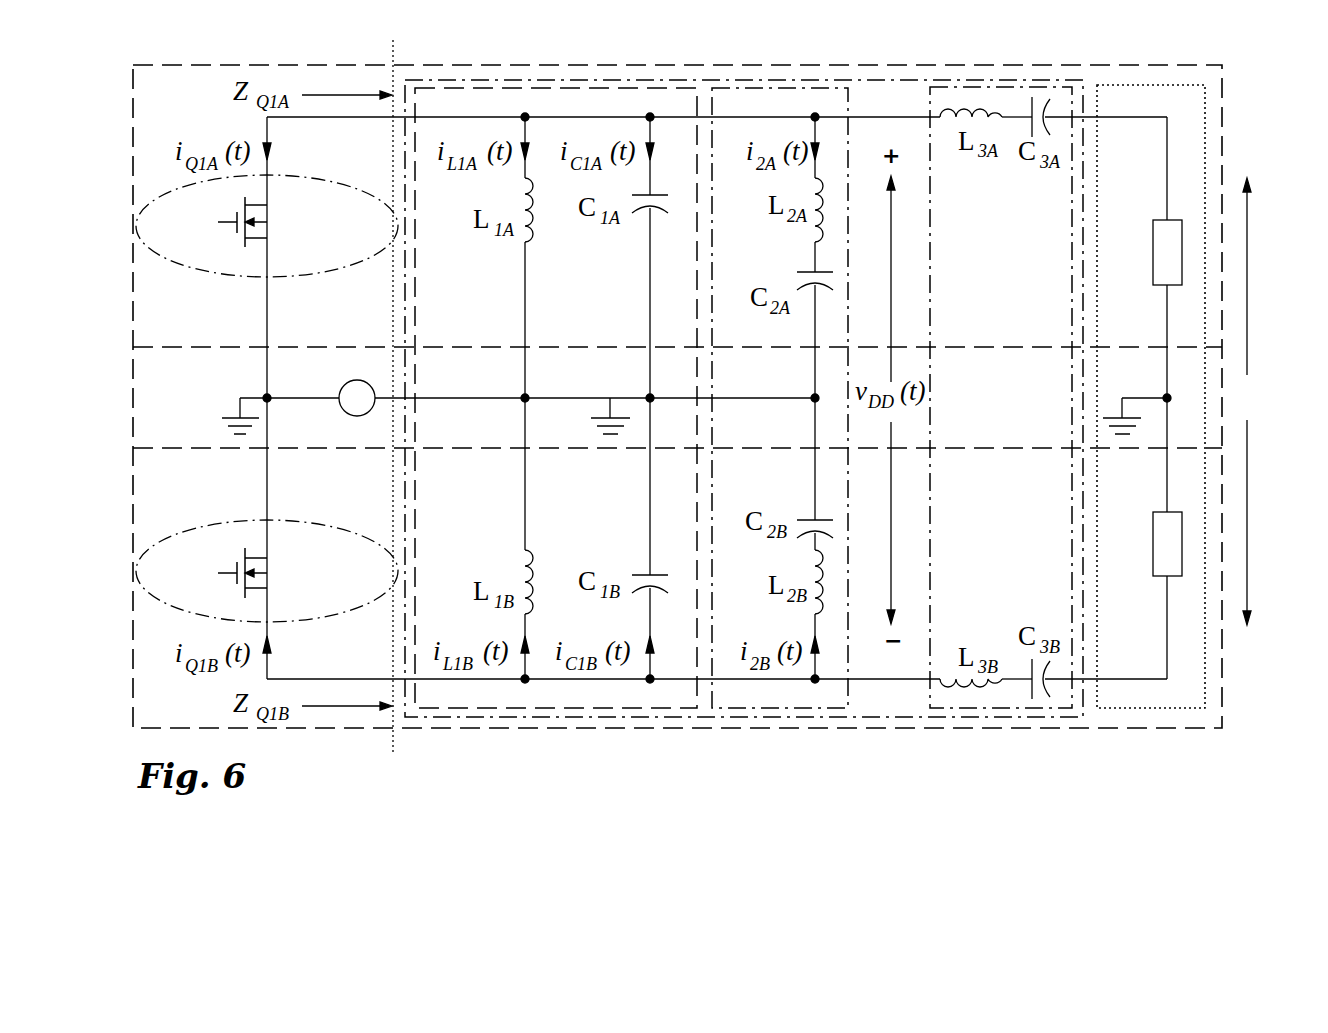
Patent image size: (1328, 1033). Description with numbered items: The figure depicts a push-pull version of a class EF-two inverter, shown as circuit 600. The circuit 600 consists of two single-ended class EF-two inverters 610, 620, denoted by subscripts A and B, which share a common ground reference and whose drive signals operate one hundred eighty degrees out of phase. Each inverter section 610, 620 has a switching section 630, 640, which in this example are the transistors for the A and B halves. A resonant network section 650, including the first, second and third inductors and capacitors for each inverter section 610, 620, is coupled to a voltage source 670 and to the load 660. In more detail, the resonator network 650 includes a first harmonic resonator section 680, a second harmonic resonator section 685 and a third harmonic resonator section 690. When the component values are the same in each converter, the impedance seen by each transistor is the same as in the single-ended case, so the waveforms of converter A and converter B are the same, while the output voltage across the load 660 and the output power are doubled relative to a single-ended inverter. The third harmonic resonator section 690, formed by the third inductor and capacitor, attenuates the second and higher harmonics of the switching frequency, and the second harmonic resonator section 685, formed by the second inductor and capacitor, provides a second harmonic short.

The circuit 600 is at (1327, 61).
The single-ended class EF2 inverter 610 is at (1222, 108).
The single-ended class EF2 inverter 620 is at (1193, 728).
The switching section 630 is at (203, 277).
The switching section 640 is at (203, 520).
The resonant network section 650 is at (513, 717).
The load 660 is at (1125, 708).
The voltage source 670 is at (341, 385).
The first harmonic resonator section 680 is at (600, 708).
The second harmonic resonator section 685 is at (745, 708).
The third harmonic resonator section 690 is at (955, 708).